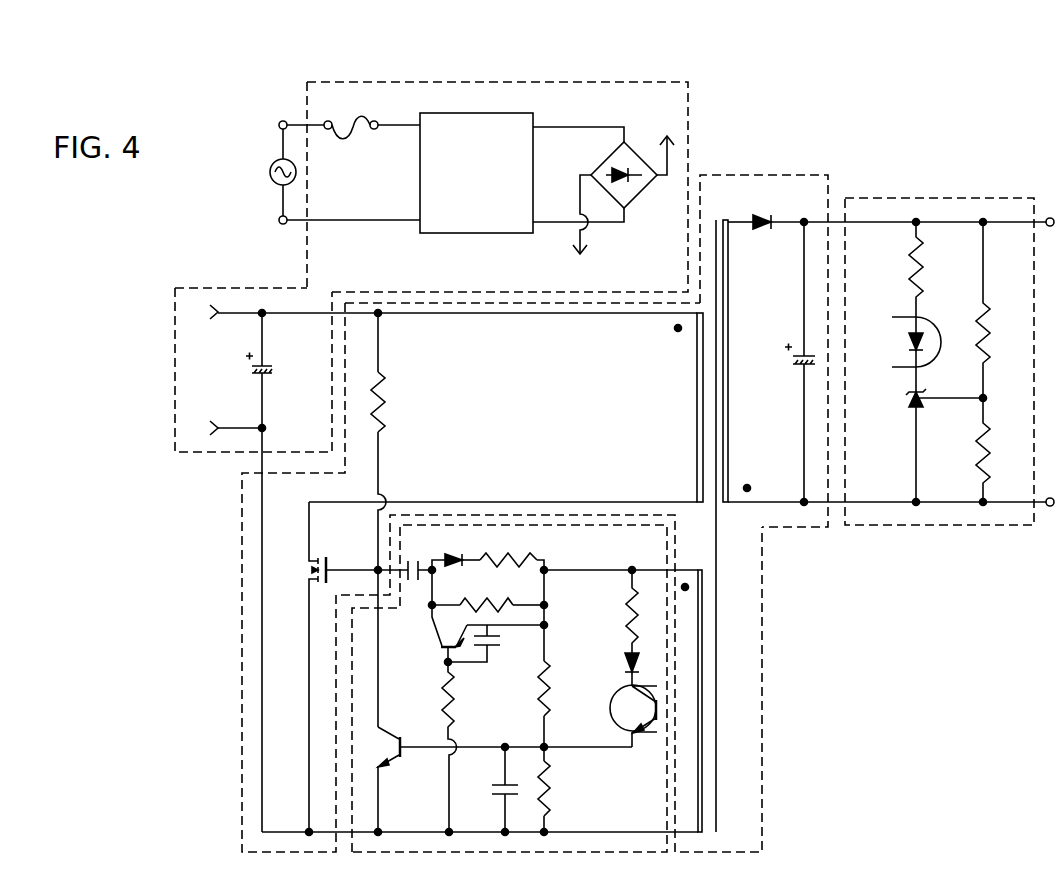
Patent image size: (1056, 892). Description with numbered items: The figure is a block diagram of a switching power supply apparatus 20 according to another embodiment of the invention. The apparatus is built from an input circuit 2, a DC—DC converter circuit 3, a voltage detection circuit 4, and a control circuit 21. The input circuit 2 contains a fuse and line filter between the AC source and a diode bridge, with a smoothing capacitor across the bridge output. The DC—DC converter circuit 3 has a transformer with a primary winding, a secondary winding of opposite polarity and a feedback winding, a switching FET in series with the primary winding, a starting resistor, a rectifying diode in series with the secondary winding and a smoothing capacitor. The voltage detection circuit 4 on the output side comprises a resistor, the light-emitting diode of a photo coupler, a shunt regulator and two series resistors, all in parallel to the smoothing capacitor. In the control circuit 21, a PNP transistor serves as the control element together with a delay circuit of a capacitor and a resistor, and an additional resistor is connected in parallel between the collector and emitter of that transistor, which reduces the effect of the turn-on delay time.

The input circuit 2 is at (506, 78).
The DC—DC converter circuit 3 is at (772, 170).
The voltage detection circuit 4 is at (942, 191).
The switching power supply apparatus 20 is at (712, 127).
The control circuit 21 is at (513, 884).